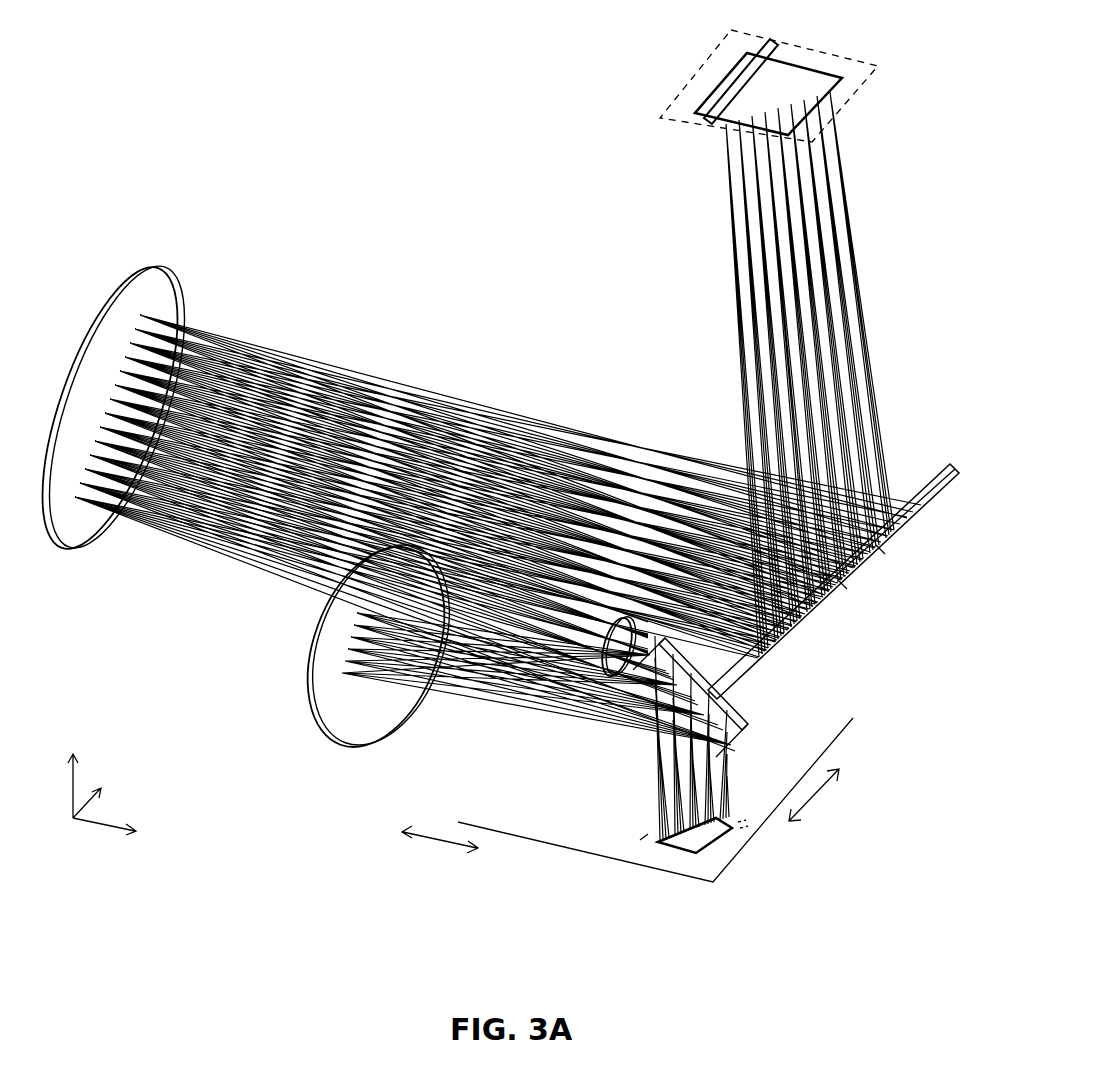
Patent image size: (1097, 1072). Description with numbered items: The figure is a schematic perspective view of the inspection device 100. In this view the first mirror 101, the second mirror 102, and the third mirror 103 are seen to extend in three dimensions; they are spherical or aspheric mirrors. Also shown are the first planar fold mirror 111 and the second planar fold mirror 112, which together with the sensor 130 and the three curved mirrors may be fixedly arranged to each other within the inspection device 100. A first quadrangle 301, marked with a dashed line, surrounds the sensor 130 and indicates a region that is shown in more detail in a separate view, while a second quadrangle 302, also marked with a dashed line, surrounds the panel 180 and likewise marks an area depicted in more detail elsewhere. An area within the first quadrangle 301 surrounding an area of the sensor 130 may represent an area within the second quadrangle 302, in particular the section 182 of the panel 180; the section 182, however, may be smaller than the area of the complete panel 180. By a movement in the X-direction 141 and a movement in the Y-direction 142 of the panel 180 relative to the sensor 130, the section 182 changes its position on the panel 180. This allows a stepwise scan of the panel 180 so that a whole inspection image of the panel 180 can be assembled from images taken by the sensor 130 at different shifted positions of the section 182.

The inspection device 100 is at (378, 136).
The first mirror 101 is at (345, 720).
The second mirror 102 is at (628, 645).
The third mirror 103 is at (150, 293).
The first planar fold mirror 111 is at (881, 560).
The second planar fold mirror 112 is at (755, 716).
The sensor 130 is at (730, 72).
The X-direction 141 is at (442, 838).
The Y-direction 142 is at (814, 796).
The panel 180 is at (567, 847).
The section 182 is at (658, 830).
The first quadrangle 301 is at (665, 103).
The second quadrangle 302 is at (788, 904).